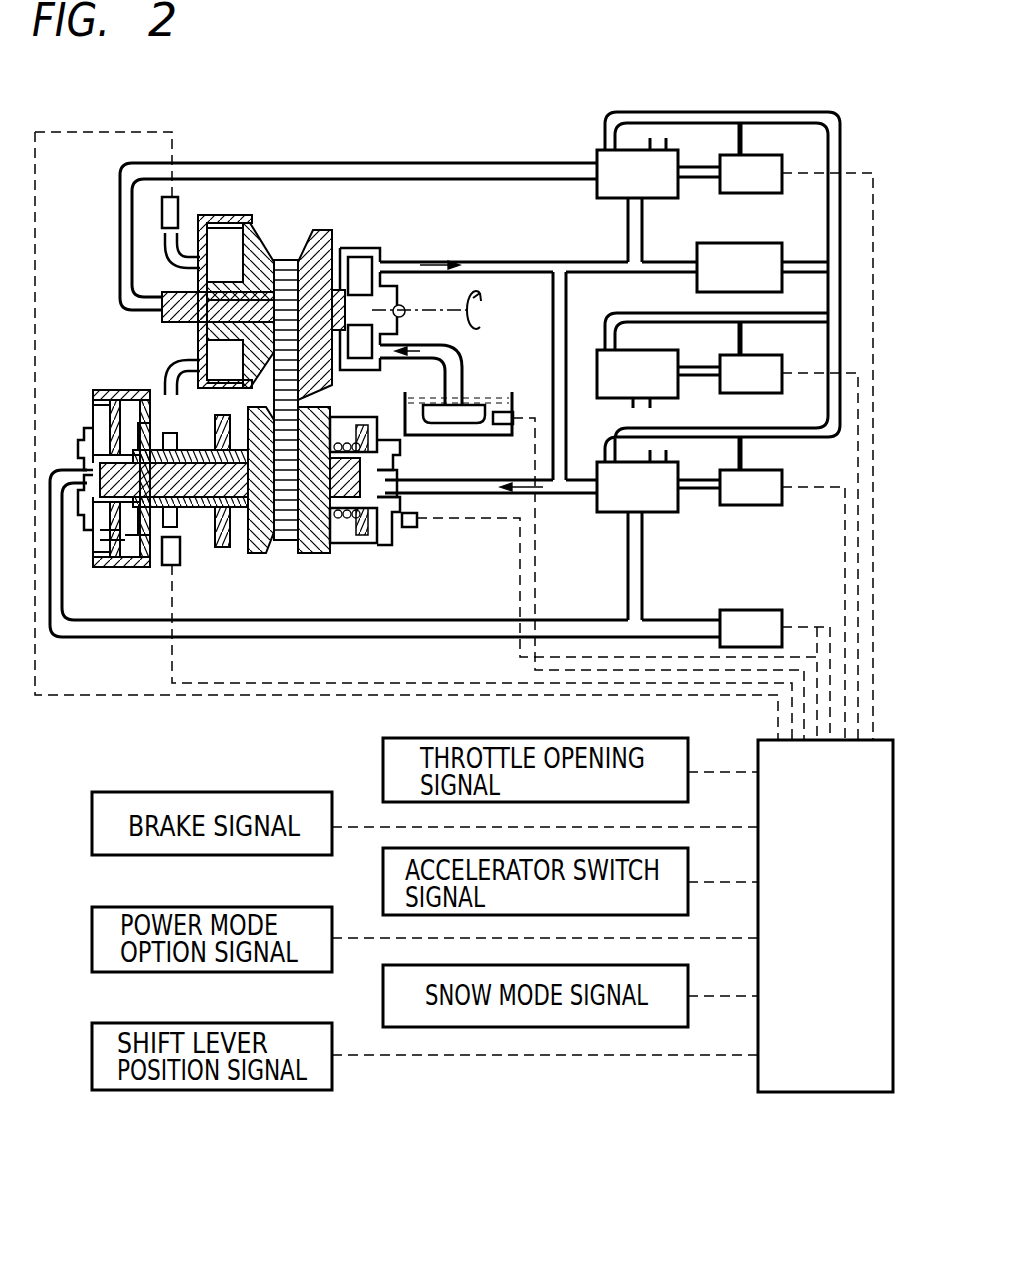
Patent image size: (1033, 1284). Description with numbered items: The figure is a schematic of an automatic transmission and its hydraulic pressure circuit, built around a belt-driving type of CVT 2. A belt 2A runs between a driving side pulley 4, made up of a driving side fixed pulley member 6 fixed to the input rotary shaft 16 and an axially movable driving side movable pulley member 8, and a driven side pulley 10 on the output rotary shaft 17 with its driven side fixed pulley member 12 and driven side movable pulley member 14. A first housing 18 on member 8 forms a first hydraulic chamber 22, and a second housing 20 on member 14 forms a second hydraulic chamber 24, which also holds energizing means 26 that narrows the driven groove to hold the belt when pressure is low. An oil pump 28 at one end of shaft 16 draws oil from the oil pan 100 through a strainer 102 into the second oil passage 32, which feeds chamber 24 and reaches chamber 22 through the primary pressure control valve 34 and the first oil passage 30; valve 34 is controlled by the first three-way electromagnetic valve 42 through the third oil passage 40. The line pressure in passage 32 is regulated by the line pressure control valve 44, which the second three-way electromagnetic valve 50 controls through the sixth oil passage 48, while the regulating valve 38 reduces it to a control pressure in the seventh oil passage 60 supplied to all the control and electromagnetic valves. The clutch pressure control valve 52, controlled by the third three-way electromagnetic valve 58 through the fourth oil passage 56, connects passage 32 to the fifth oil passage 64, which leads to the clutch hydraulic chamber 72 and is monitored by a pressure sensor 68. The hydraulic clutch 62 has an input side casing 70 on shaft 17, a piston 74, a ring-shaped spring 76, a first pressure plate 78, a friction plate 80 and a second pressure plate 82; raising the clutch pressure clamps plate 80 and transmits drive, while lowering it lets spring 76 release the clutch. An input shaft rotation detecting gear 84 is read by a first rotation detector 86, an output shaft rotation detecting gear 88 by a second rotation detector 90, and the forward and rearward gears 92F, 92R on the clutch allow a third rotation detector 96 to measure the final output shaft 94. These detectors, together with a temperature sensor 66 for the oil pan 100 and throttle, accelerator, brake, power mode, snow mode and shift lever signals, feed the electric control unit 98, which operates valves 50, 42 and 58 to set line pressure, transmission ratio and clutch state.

The belt-driving type of CVT 2 is at (783, 108).
The belt 2A is at (287, 268).
The driving side pulley 4 is at (323, 205).
The driving side fixed pulley member 6 is at (333, 245).
The driving side movable pulley member 8 is at (252, 255).
The driven side pulley 10 is at (390, 537).
The driven side fixed pulley member 12 is at (262, 548).
The driven side movable pulley member 14 is at (315, 553).
The rotary shaft 16 is at (400, 315).
The rotary shaft 17 is at (240, 487).
The first housing 18 is at (205, 215).
The second housing 20 is at (362, 440).
The first hydraulic chamber 22 is at (215, 352).
The second hydraulic chamber 24 is at (342, 540).
The energizing means 26 is at (362, 545).
The oil pump 28 is at (363, 262).
The first oil passage 30 is at (500, 163).
The second oil passage 32 is at (558, 265).
The primary pressure control valve 34 is at (612, 202).
The regulating valve 38 is at (768, 292).
The third oil passage 40 is at (698, 180).
The first three-way electromagnetic valve 42 is at (760, 193).
The line pressure control valve 44 is at (670, 347).
The sixth oil passage 48 is at (703, 375).
The second three-way electromagnetic valve 50 is at (772, 356).
The clutch pressure control valve 52 is at (676, 462).
The fourth oil passage 56 is at (707, 490).
The third three-way electromagnetic valve 58 is at (772, 470).
The seventh oil passage 60 is at (838, 138).
The hydraulic clutch 62 is at (103, 388).
The fifth oil passage 64 is at (395, 638).
The temperature sensor 66 is at (513, 415).
The pressure sensor 68 is at (772, 610).
The input side casing 70 is at (93, 418).
The clutch hydraulic chamber 72 is at (82, 450).
The piston 74 is at (90, 500).
The ring-shaped spring 76 is at (100, 528).
The first pressure plate 78 is at (105, 540).
The friction plate 80 is at (122, 545).
The second pressure plate 82 is at (150, 545).
The input shaft rotation detecting gear 84 is at (163, 247).
The first rotation detector 86 is at (172, 197).
The output shaft rotation detecting gear 88 is at (393, 447).
The second rotation detector 90 is at (420, 518).
The gear for rearward movement 92R is at (170, 433).
The gear for forward movement 92F is at (180, 527).
The final output shaft 94 is at (216, 432).
The third rotation detector 96 is at (170, 566).
The electric control unit 98 is at (885, 1093).
The oil pan 100 is at (458, 430).
The strainer 102 is at (470, 405).